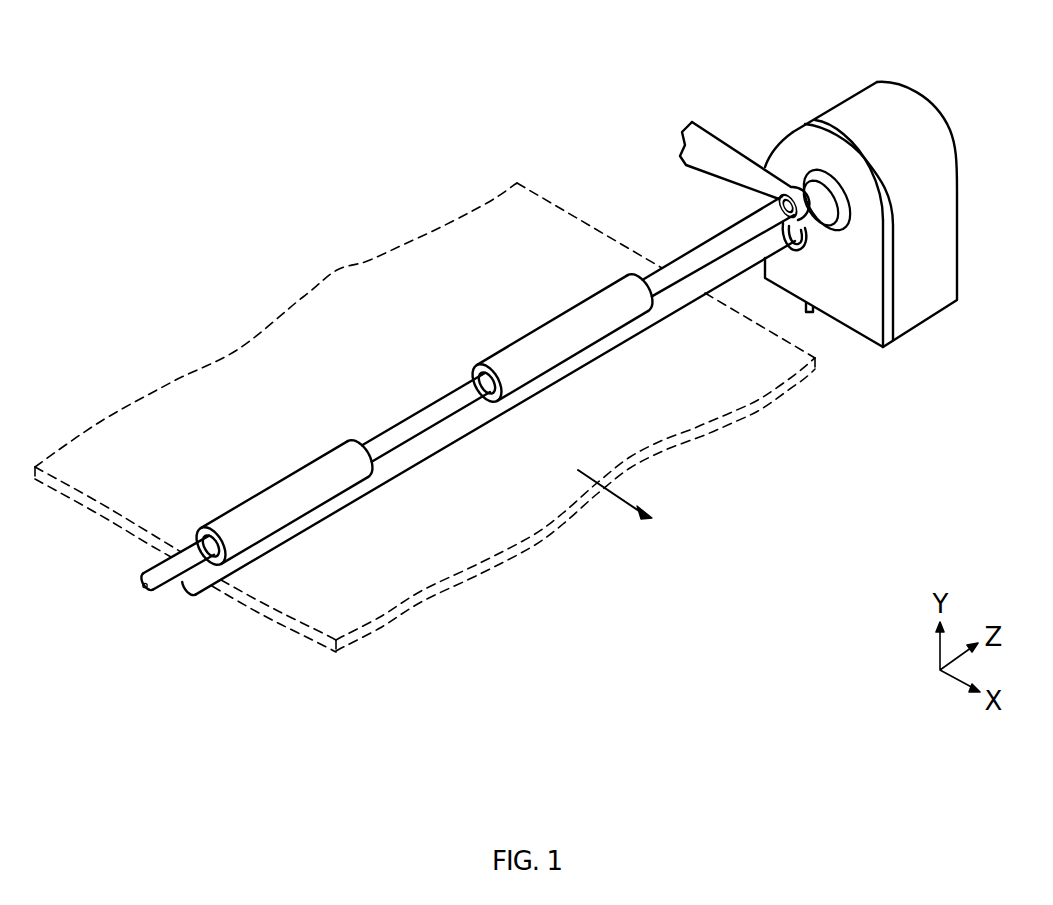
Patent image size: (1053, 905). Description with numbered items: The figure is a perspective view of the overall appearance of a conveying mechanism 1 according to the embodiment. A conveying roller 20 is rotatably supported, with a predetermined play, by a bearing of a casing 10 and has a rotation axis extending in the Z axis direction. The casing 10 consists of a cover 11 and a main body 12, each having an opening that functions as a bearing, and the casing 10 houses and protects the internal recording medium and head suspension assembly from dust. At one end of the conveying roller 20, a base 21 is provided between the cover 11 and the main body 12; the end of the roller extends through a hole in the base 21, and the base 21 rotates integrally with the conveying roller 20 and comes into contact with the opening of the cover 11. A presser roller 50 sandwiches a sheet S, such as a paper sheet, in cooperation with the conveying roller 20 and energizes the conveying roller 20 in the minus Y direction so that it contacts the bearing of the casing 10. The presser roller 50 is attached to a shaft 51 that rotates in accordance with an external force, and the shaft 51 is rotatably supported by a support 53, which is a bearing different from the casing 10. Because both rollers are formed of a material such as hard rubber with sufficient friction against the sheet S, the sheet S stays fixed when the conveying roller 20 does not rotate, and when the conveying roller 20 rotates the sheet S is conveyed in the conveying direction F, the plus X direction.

The conveying mechanism 1 is at (347, 69).
The casing 10 is at (1033, 373).
The cover 11 is at (865, 328).
The main body 12 is at (918, 310).
The conveying roller 20 is at (430, 447).
The base 21 is at (827, 225).
The presser roller 50 is at (548, 327).
The shaft 51 is at (423, 410).
The support 53 is at (723, 165).
The sheet S is at (401, 576).
The conveying direction F is at (616, 508).